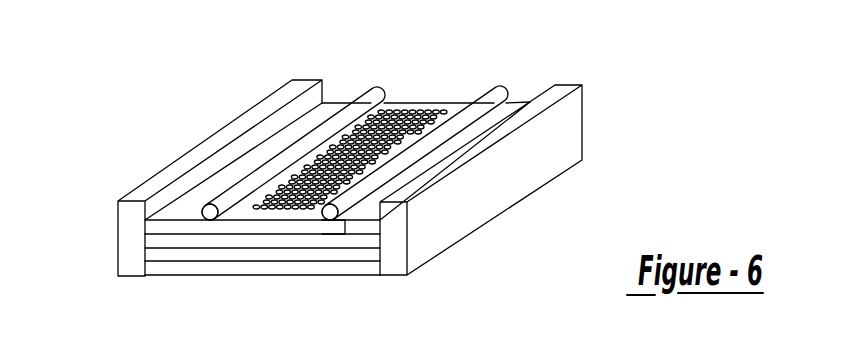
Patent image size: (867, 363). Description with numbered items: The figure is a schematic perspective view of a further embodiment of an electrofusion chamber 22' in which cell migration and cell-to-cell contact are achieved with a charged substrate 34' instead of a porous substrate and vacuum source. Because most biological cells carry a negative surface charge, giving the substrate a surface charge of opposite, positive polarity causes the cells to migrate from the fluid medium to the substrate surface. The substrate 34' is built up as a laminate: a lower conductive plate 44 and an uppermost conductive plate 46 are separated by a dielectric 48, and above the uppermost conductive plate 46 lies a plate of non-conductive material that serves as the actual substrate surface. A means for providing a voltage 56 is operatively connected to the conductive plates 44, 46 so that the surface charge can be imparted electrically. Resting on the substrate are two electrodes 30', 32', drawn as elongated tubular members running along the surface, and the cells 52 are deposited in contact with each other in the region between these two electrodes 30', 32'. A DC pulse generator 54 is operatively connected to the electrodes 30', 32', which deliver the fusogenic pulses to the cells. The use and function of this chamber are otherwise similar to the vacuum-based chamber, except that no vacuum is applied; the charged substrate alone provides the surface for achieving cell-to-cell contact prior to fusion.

The chamber 22' is at (529, 180).
The electrode 30' is at (293, 117).
The electrode 32' is at (453, 122).
The substrate 34' is at (374, 286).
The conductive plate 44 is at (172, 267).
The conductive plate 46 is at (160, 240).
The dielectric 48 is at (160, 257).
The cells 52 is at (425, 110).
The DC pulse generator 54 is at (210, 212).
The means for providing a voltage 56 is at (360, 268).